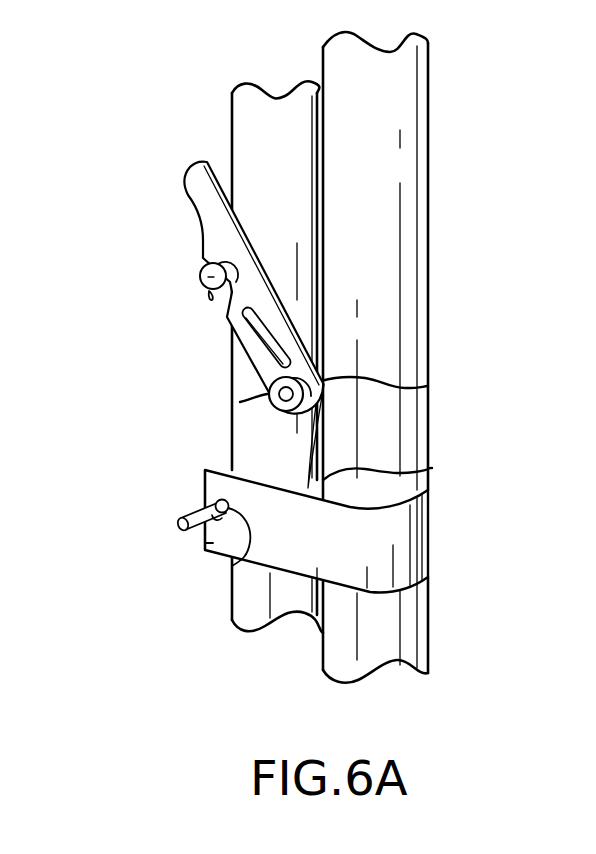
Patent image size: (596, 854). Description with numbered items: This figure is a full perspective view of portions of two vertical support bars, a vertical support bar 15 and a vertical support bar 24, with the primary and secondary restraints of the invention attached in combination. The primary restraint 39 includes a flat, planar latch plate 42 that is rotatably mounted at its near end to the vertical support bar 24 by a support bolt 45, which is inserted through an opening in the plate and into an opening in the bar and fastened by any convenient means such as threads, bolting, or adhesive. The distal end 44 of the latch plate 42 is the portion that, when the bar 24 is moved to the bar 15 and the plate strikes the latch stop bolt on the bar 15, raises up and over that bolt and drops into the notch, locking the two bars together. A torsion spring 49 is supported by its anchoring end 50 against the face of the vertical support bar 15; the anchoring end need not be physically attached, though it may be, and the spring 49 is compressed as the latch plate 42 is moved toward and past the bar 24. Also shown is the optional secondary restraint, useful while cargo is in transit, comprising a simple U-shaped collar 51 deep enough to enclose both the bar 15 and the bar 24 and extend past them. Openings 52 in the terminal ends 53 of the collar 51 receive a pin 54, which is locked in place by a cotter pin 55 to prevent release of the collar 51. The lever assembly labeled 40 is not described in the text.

The vertical support bar 15 is at (259, 102).
The vertical support bar 24 is at (414, 322).
The primary restraint 39 is at (284, 560).
The lever assembly 40 is at (205, 288).
The flat, planar latch plate 42 is at (252, 278).
The distal end 44 is at (207, 278).
The support bolt 45 is at (240, 402).
The torsion spring 49 is at (428, 386).
The anchoring end 50 is at (432, 468).
The U-shaped collar 51 is at (432, 551).
The openings 52 is at (240, 560).
The terminal ends 53 is at (203, 543).
The pin 54 is at (186, 510).
The cotter pin 55 is at (182, 522).